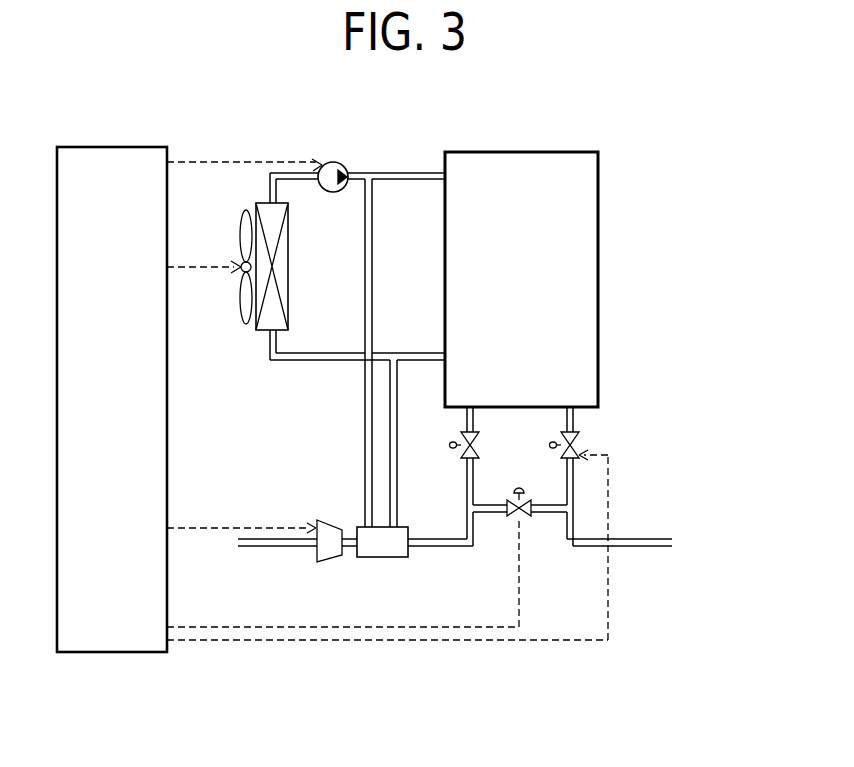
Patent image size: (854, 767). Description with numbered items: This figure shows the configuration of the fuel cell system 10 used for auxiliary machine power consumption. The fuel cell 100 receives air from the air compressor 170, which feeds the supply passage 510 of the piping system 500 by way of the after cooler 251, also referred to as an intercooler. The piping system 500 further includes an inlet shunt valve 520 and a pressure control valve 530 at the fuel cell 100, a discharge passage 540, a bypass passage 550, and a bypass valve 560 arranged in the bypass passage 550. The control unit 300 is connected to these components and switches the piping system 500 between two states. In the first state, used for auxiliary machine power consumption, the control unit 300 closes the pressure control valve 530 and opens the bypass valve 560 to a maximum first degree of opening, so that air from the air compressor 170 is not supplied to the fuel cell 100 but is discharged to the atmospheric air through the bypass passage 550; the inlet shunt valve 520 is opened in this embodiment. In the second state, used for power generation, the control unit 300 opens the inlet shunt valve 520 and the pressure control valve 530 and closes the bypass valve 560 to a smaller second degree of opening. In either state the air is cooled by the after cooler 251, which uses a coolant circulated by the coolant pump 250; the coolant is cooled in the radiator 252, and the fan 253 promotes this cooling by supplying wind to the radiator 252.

The fuel cell system 10 is at (697, 108).
The fuel cell 100 is at (518, 152).
The air compressor 170 is at (330, 520).
The coolant pump 250 is at (345, 164).
The after cooler 251 is at (375, 558).
The radiator 252 is at (289, 240).
The fan 253 is at (243, 213).
The control unit 300 is at (110, 147).
The piping system 500 is at (663, 432).
The supply passage 510 is at (433, 547).
The inlet shunt valve 520 is at (473, 431).
The pressure control valve 530 is at (582, 440).
The discharge passage 540 is at (617, 538).
The bypass passage 550 is at (515, 490).
The bypass valve 560 is at (547, 505).